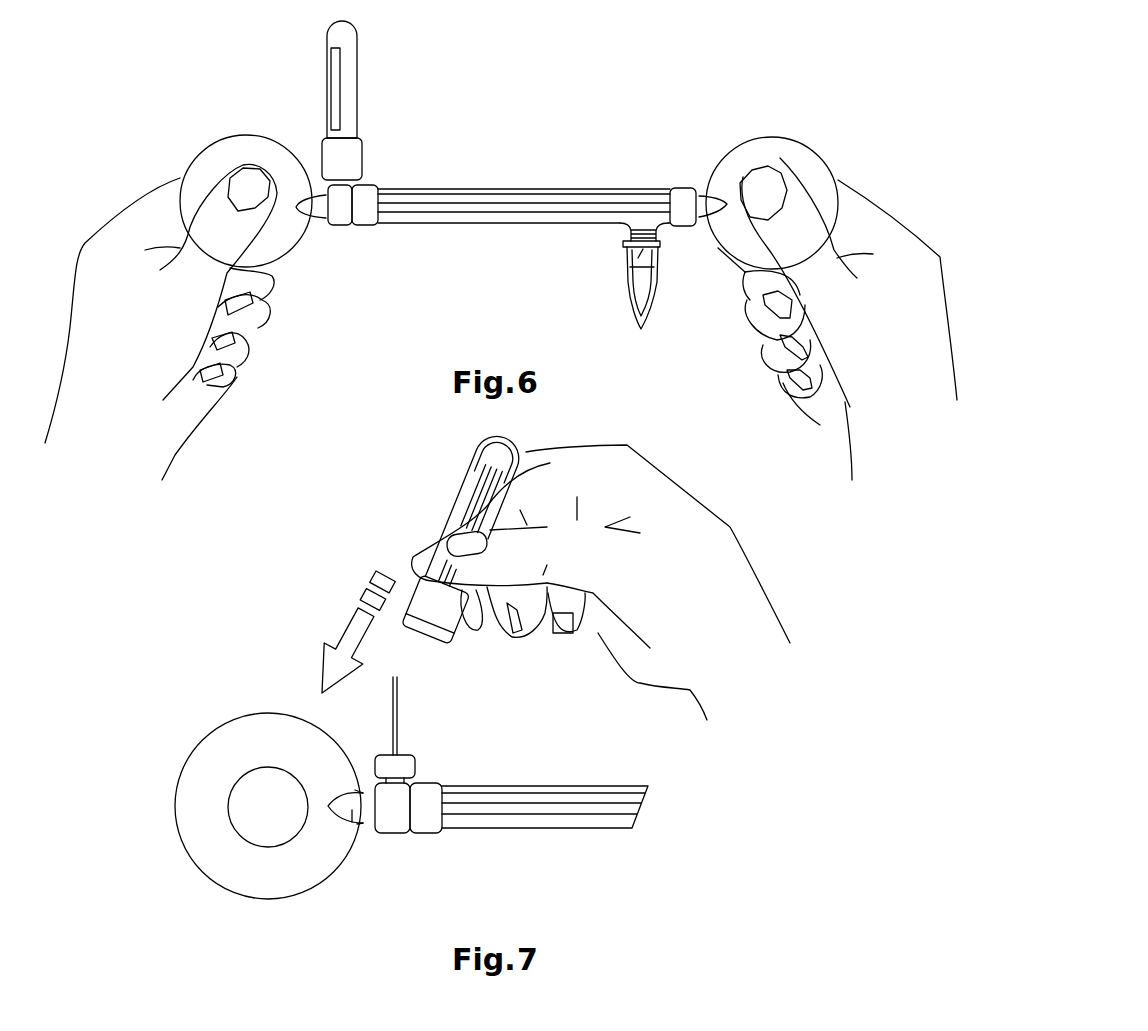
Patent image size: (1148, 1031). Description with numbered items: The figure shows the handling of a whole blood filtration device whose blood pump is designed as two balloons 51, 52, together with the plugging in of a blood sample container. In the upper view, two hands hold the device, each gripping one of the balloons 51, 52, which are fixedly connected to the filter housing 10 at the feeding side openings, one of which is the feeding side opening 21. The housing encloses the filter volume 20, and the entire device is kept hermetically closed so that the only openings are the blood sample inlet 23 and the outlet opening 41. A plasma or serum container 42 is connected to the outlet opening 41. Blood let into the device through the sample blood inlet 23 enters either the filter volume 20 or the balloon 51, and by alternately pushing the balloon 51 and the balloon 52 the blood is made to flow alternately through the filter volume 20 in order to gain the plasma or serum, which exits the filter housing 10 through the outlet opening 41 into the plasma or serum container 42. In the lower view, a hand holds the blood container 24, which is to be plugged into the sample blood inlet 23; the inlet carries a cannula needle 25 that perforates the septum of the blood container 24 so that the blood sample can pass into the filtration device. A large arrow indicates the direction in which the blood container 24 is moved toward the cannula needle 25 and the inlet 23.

In FIG. 6, the filter housing 10 is at (527, 189).
In FIG. 7, the filter housing 10 is at (614, 815).
In FIG. 6, the filter volume 20 is at (578, 194).
In FIG. 7, the feeding side opening 21 is at (352, 837).
In FIG. 6, the blood sample inlet 23 is at (360, 182).
In FIG. 7, the blood sample inlet 23 is at (405, 752).
In FIG. 6, the blood container 24 is at (350, 73).
In FIG. 7, the blood container 24 is at (478, 473).
In FIG. 7, the cannula needle 25 is at (400, 698).
In FIG. 6, the outlet opening 41 is at (623, 224).
In FIG. 6, the plasma or serum container 42 is at (627, 263).
In FIG. 6, the balloon 51 is at (248, 148).
In FIG. 7, the balloon 51 is at (253, 737).
In FIG. 6, the balloon 52 is at (783, 155).